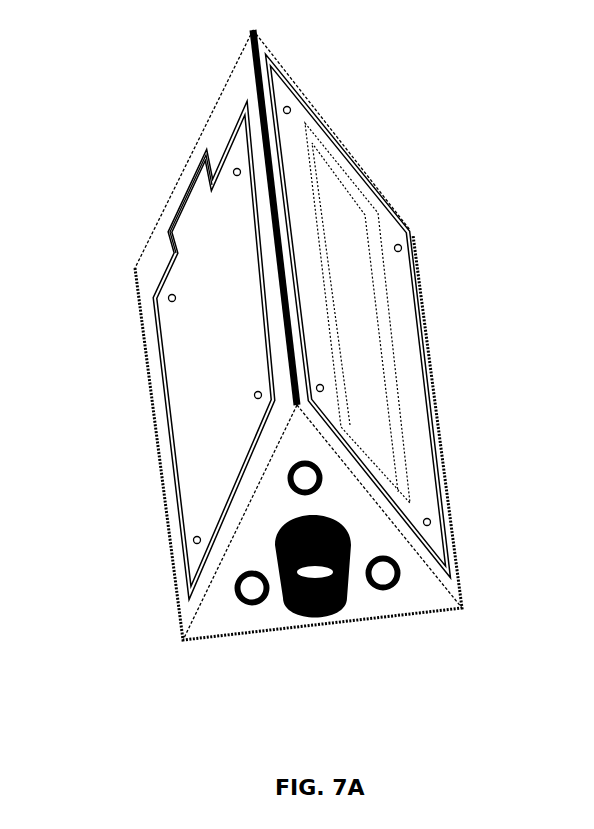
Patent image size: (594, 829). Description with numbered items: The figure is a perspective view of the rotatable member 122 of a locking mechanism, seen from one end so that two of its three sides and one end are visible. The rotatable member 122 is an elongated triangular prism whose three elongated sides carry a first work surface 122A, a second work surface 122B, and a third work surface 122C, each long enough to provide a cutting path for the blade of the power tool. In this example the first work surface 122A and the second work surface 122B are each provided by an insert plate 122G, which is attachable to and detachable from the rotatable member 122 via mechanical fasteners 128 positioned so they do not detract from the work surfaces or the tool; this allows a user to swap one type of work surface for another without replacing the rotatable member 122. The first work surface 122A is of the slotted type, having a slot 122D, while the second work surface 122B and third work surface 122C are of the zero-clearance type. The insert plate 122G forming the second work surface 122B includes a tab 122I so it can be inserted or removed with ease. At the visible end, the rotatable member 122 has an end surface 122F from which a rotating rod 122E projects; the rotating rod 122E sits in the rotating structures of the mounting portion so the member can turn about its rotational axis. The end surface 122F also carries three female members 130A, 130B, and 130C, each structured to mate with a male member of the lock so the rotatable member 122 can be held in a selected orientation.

The rotatable member 122 is at (355, 113).
The first work surface 122A is at (404, 228).
The second work surface 122B is at (197, 314).
The third work surface 122C is at (262, 634).
The slot 122D is at (339, 294).
The rotating rod 122E is at (313, 626).
The end surface 122F is at (415, 600).
The insert plate 122G is at (286, 326).
The tab 122I is at (194, 215).
The mechanical fasteners 128 is at (288, 107).
The female member 130A is at (372, 573).
The female member 130B is at (308, 476).
The female member 130C is at (255, 589).